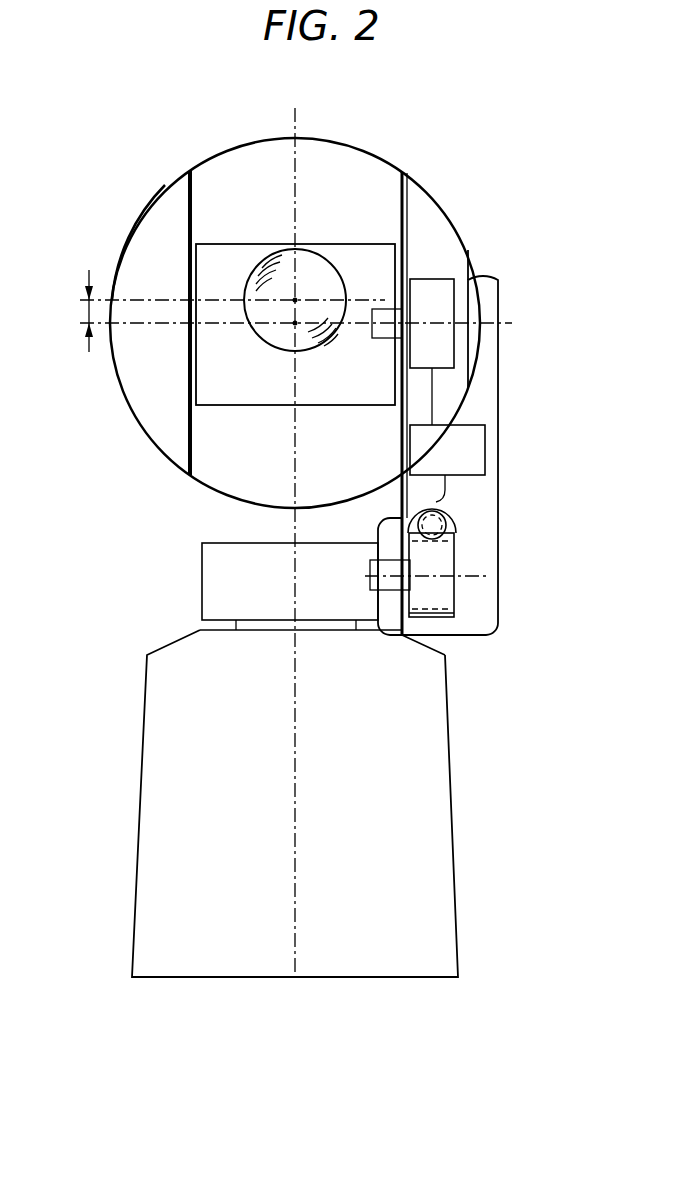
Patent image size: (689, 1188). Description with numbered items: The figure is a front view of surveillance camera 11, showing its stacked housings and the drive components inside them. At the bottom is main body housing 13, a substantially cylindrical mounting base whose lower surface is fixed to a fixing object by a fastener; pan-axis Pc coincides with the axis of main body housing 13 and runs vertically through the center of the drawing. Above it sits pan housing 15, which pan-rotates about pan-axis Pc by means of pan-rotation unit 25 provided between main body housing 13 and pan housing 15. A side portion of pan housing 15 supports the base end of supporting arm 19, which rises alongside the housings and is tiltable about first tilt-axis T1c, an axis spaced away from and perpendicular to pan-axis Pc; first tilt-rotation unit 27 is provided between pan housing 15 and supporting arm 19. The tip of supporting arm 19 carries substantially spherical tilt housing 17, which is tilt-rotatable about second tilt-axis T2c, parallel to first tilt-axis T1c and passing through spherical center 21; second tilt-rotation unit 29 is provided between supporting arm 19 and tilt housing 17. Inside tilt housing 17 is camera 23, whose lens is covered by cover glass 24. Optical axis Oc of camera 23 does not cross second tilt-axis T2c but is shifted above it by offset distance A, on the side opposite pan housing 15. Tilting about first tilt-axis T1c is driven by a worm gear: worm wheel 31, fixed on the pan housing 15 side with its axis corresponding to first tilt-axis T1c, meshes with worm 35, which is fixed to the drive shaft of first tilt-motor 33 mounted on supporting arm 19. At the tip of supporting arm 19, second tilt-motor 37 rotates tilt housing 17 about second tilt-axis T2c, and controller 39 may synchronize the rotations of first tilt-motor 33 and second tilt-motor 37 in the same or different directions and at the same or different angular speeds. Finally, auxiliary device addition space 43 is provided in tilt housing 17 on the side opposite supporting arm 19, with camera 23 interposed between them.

The surveillance camera 11 is at (126, 122).
The main body housing 13 is at (135, 933).
The pan housing 15 is at (202, 588).
The tilt housing 17 is at (275, 138).
The supporting arm 19 is at (500, 400).
The spherical center 21 is at (295, 323).
The camera 23 is at (228, 244).
The cover glass 24 is at (320, 267).
The pan-rotation unit 25 is at (252, 628).
The first tilt-rotation unit 27 is at (403, 637).
The second tilt-rotation unit 29 is at (408, 170).
The worm wheel 31 is at (452, 620).
The first tilt-motor 33 is at (458, 522).
The worm 35 is at (452, 506).
The second tilt-motor 37 is at (438, 279).
The controller 39 is at (487, 447).
The auxiliary device addition space 43 is at (156, 208).
The optical axis Oc is at (295, 300).
The offset distance A is at (76, 311).
The pan-axis Pc is at (295, 960).
The first tilt-axis T1c is at (473, 578).
The second tilt-axis T2c is at (478, 323).